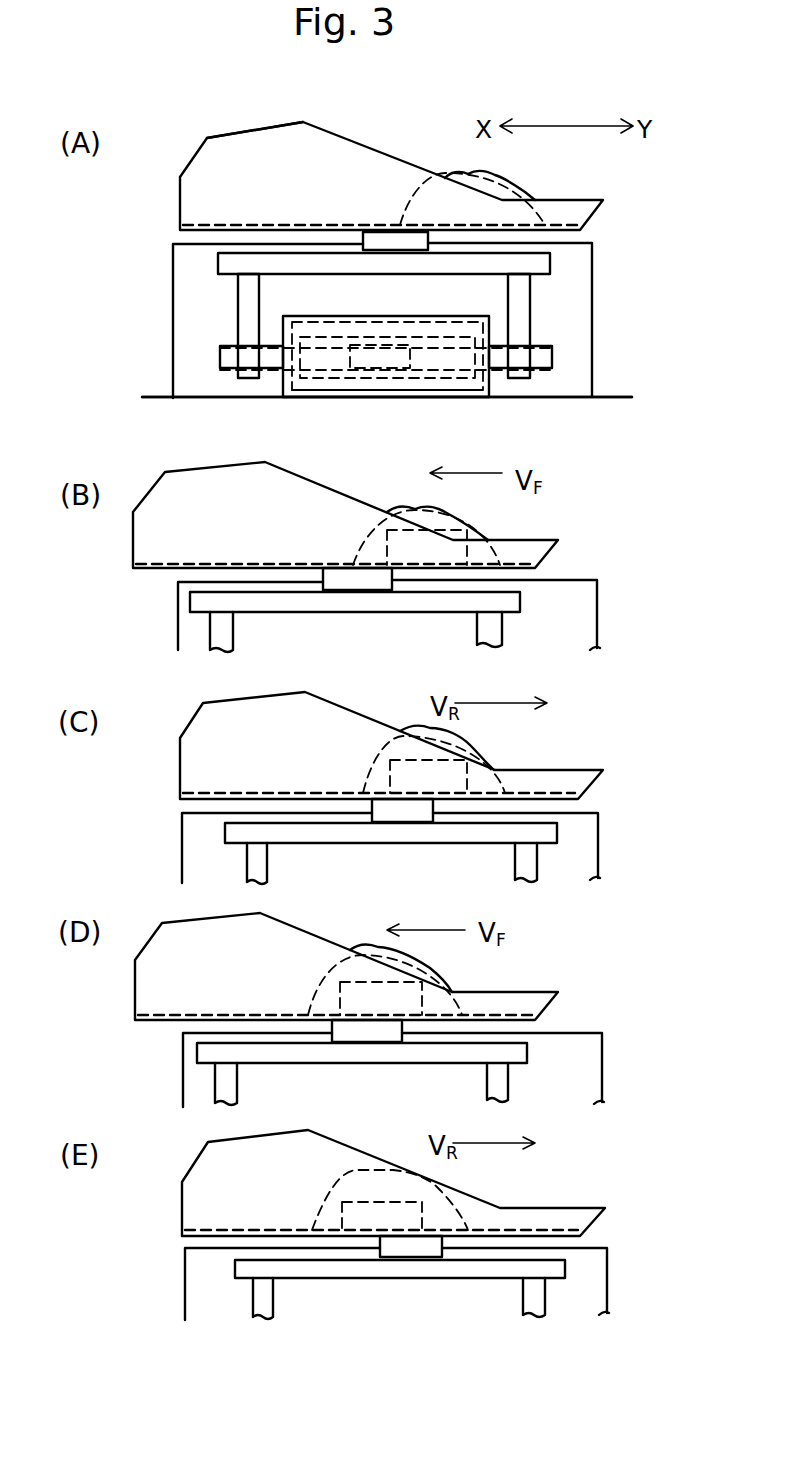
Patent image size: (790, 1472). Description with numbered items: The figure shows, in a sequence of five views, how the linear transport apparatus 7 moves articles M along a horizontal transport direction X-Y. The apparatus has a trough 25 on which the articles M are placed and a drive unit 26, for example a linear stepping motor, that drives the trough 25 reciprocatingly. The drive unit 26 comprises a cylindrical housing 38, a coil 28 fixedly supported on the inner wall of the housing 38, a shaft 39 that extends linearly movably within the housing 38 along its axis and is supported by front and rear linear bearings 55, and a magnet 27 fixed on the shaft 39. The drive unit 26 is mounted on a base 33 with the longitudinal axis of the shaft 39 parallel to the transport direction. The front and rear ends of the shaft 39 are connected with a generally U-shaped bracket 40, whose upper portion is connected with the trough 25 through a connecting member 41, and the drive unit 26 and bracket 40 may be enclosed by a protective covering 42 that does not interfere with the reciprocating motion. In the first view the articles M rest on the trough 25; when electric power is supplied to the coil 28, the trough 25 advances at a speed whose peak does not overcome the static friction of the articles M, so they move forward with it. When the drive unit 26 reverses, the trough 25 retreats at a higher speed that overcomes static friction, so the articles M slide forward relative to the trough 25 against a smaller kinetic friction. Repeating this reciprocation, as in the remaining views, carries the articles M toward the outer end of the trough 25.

The linear transport apparatus 7 is at (174, 126).
The trough 25 is at (264, 147).
The articles M is at (510, 180).
The connecting member 41 is at (413, 242).
The bracket 40 is at (529, 298).
The protective covering 42 is at (595, 298).
The shaft 39 is at (273, 363).
The drive unit 26 is at (490, 404).
The housing 38 is at (390, 316).
The linear bearings 55 is at (300, 355).
The magnet 27 is at (397, 360).
The coil 28 is at (362, 392).
The base 33 is at (612, 393).